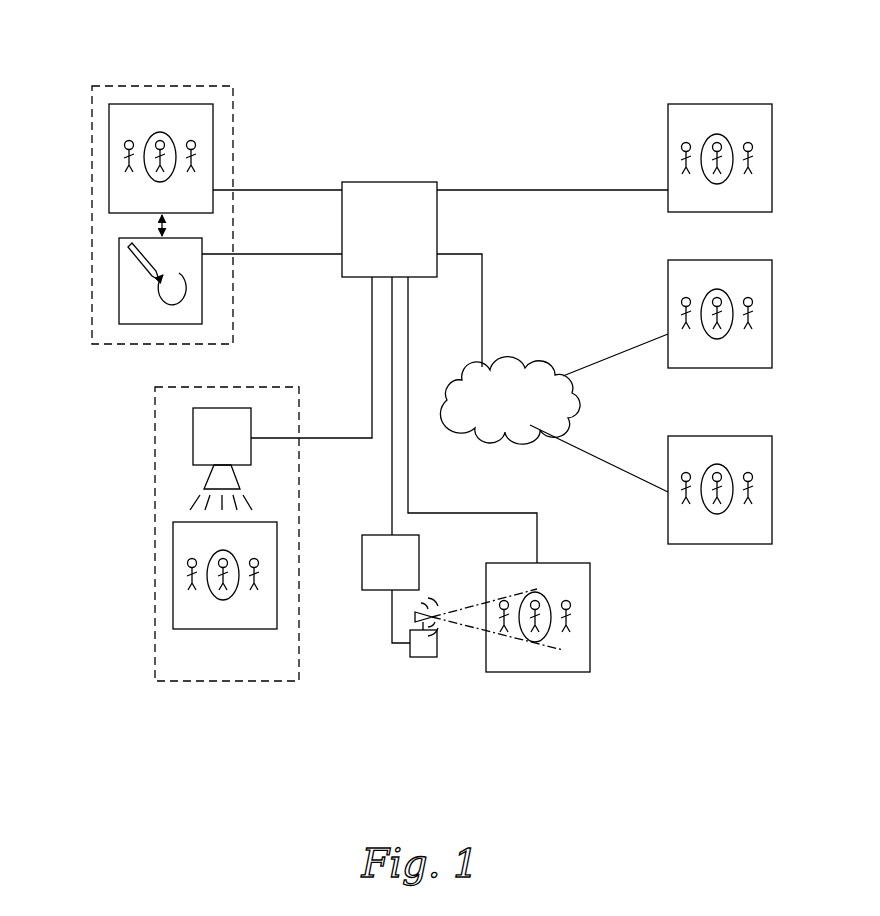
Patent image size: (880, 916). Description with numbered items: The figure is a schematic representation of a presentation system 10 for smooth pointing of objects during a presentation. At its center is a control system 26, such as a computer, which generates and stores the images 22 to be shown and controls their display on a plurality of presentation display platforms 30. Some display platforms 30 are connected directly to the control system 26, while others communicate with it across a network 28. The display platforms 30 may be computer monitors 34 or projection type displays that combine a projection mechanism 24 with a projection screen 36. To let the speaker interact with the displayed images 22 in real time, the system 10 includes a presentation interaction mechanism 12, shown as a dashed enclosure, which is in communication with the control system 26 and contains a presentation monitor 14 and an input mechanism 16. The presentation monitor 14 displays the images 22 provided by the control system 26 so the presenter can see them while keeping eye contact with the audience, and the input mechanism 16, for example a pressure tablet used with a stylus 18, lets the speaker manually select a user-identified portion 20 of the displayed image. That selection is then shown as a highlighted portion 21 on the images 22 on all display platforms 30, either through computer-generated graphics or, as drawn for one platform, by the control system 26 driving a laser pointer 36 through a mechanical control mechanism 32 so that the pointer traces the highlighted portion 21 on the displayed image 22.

The presentation system 10 is at (230, 797).
The presentation interaction mechanism 12 is at (189, 84).
The presentation monitor 14 is at (213, 120).
The input mechanism 16 is at (202, 285).
The stylus 18 is at (138, 262).
The user-identified portion 20 is at (167, 307).
The highlighted portion 21 is at (160, 182).
The images 22 is at (133, 125).
The projection mechanism 24 is at (193, 438).
The control system 26 is at (398, 182).
The network 28 is at (520, 363).
The presentation display platform 30 is at (772, 120).
The mechanical control mechanism 32 is at (419, 553).
The computer monitor 34 is at (697, 212).
The projection screen / laser pointer 36 is at (418, 657).